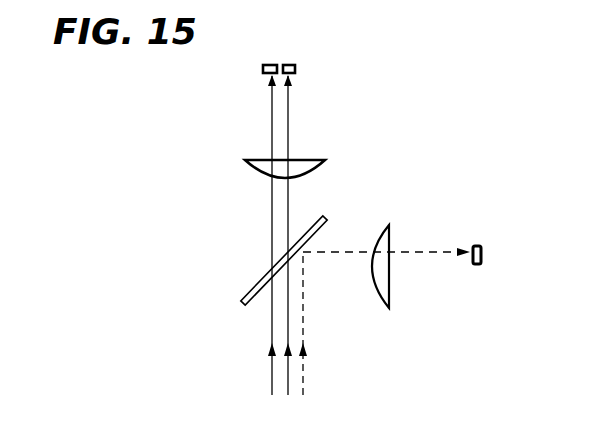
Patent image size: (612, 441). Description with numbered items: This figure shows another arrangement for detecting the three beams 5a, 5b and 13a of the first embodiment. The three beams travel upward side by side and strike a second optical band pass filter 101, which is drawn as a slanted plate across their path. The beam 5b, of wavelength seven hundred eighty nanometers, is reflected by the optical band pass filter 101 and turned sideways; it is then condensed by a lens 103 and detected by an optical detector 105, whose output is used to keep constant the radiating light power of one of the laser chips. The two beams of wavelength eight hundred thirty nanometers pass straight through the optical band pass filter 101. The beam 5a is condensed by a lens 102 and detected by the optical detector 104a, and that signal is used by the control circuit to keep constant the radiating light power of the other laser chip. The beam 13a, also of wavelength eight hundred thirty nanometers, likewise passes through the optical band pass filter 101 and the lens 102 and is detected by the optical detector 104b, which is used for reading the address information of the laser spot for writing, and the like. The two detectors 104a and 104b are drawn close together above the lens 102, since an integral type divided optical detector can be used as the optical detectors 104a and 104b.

The beam 13a is at (272, 368).
The beam 5a is at (288, 381).
The beam 5b is at (303, 331).
The second optical band pass filter 101 is at (253, 289).
The lens 102 is at (325, 160).
The lens 103 is at (389, 304).
The optical detector 104a is at (291, 64).
The optical detector 104b is at (271, 64).
The optical detector 105 is at (477, 245).